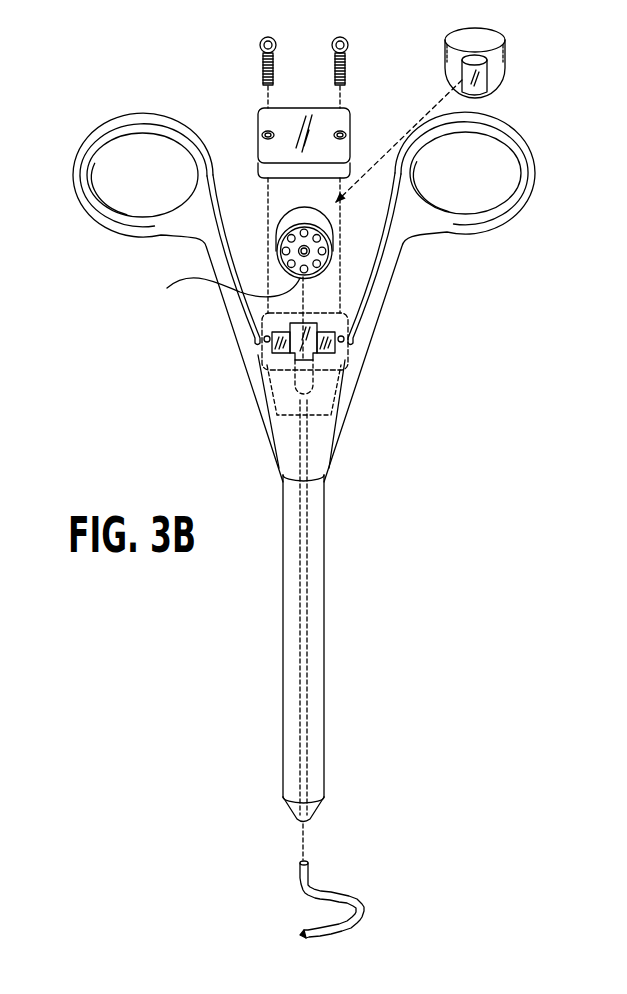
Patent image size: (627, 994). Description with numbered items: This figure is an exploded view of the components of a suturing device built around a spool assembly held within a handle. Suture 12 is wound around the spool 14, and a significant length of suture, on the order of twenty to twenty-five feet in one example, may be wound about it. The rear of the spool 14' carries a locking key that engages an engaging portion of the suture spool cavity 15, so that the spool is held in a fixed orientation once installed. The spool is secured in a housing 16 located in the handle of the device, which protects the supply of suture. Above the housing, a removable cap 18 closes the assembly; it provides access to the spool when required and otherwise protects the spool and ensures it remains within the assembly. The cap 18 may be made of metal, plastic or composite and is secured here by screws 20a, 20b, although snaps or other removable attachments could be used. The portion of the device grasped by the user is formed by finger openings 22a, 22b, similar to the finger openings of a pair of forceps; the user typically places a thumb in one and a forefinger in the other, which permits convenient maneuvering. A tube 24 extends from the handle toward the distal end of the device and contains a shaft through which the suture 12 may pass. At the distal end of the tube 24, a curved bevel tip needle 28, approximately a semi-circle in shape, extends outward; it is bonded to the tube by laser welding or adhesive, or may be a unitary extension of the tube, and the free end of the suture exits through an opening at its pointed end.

The suture 12 is at (194, 280).
The spool 14 is at (275, 227).
The rear of the spool 14' is at (466, 107).
The suture spool cavity 15 is at (302, 337).
The housing 16 is at (343, 398).
The removable cap 18 is at (343, 110).
The screw 20a is at (259, 35).
The screw 20b is at (350, 35).
The finger opening 22a is at (130, 117).
The finger opening 22b is at (507, 128).
The tube 24 is at (325, 522).
The curved bevel tip needle 28 is at (355, 903).